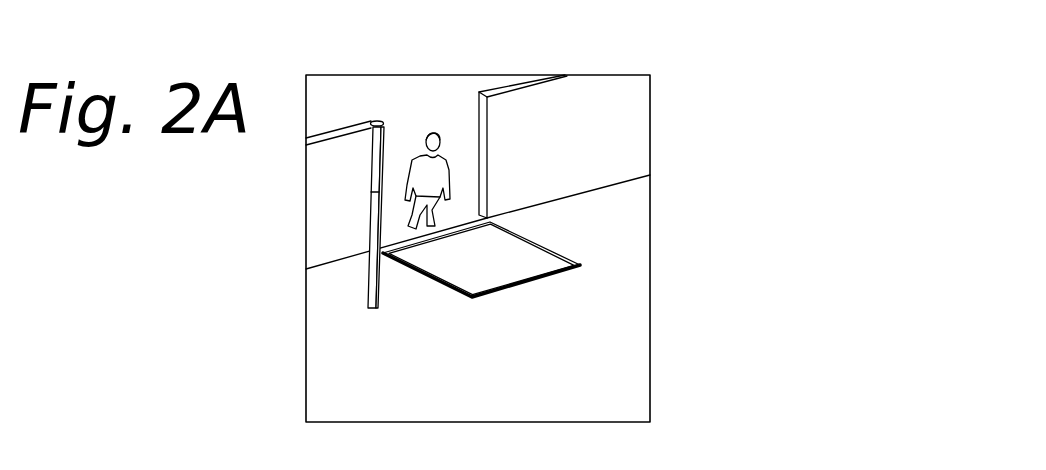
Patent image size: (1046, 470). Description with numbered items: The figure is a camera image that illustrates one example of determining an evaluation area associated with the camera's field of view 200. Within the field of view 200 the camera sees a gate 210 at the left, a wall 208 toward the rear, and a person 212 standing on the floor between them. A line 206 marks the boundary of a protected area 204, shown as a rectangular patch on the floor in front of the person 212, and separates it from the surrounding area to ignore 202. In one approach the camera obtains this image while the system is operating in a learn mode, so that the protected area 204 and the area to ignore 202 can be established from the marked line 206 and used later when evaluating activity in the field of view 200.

The field of view 200 is at (650, 206).
The area to ignore 202 is at (345, 359).
The protected area 204 is at (503, 273).
The line 206 is at (567, 268).
The wall 208 is at (531, 80).
The gate 210 is at (373, 170).
The person 212 is at (437, 134).